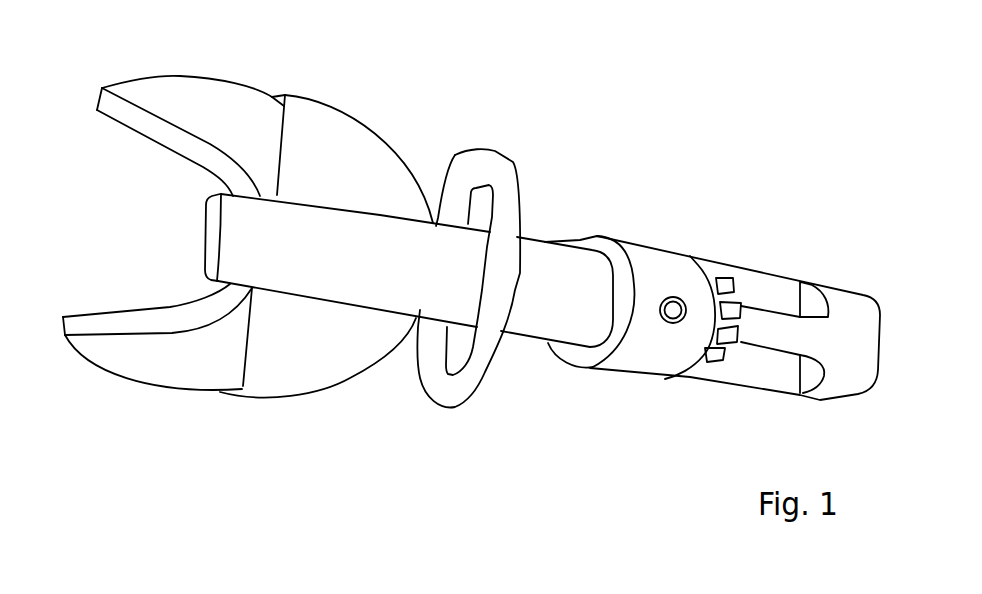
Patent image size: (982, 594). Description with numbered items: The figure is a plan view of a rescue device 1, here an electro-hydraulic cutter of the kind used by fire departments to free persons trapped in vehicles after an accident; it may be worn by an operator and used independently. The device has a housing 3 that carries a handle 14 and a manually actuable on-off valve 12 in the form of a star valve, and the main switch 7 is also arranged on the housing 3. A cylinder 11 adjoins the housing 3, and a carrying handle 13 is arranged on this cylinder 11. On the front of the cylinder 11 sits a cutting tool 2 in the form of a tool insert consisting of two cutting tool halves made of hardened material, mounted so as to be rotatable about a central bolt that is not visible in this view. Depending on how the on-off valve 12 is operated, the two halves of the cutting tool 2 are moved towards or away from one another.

The rescue device 1 is at (471, 247).
The cutting tool 2 is at (192, 96).
The housing 3 is at (647, 268).
The main switch 7 is at (672, 320).
The cylinder 11 is at (555, 263).
The on-off valve 12 is at (731, 294).
The carrying handle 13 is at (452, 390).
The handle 14 is at (787, 332).